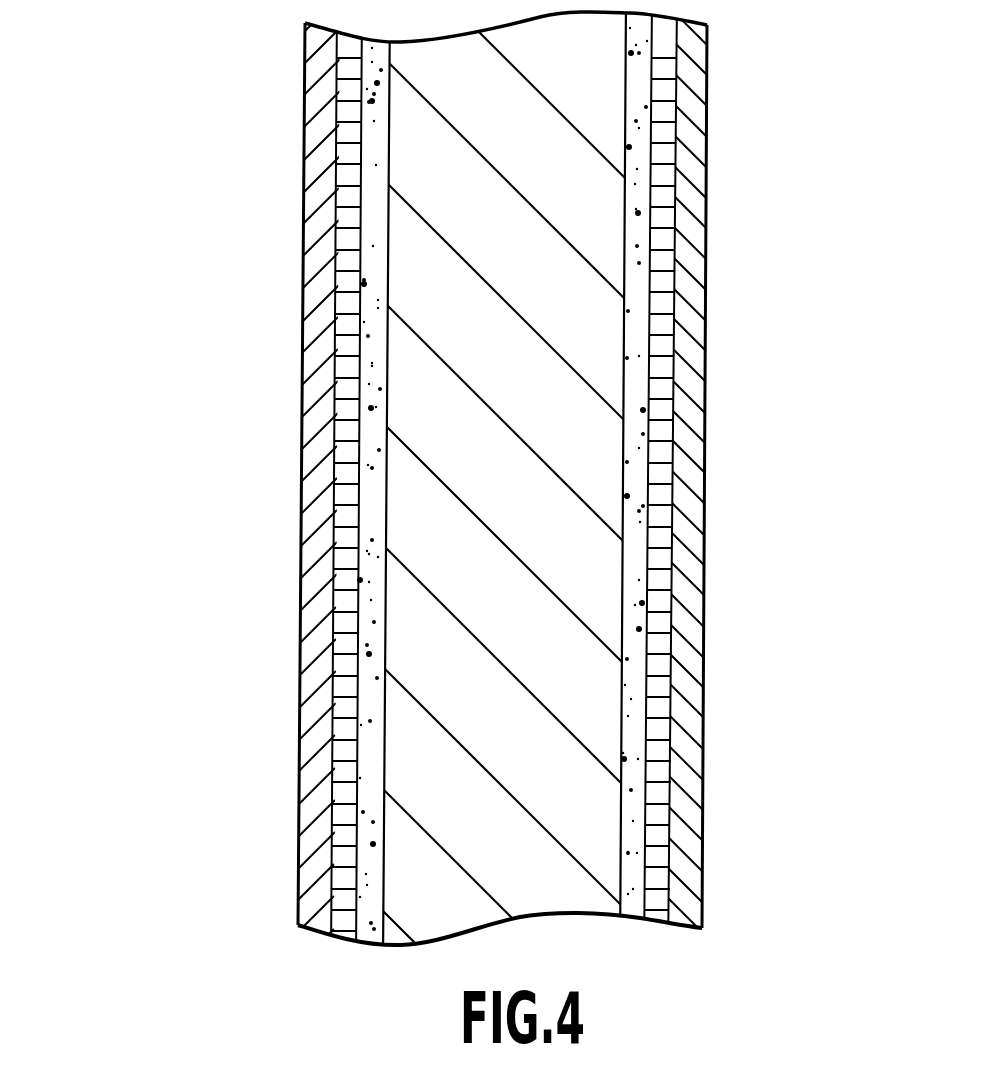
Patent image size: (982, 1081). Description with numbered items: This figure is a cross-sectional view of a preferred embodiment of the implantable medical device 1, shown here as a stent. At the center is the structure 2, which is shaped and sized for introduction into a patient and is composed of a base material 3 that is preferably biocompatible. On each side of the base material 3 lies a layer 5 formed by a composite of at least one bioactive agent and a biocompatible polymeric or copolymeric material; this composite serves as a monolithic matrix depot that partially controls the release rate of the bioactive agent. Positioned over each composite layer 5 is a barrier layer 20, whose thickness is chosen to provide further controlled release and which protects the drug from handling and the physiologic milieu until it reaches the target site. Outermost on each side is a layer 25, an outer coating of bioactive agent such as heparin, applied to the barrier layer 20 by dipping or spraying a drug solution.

The implantable medical device 1 is at (222, 186).
The structure 2 is at (504, 480).
The base material 3 is at (504, 540).
The layer 5 is at (504, 480).
The barrier layer 20 is at (504, 480).
The layer 25 is at (504, 496).